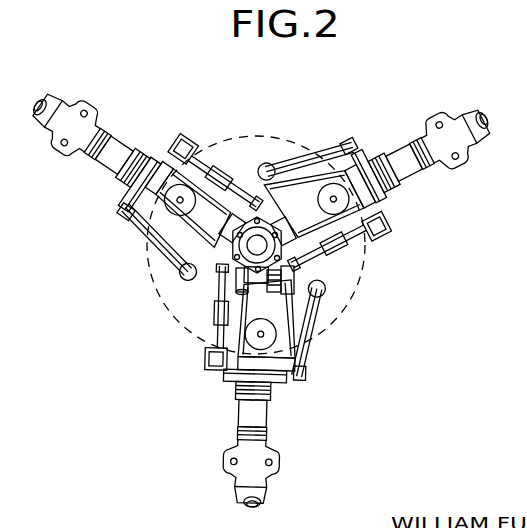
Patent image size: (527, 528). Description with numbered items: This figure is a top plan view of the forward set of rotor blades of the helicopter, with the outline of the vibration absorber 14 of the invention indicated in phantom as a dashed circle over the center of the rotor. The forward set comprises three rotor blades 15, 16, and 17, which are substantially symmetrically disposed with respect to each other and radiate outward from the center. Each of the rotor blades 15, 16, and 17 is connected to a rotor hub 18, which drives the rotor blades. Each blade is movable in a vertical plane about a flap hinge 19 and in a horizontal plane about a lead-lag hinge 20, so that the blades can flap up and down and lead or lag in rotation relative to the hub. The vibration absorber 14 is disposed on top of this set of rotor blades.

The vibration absorber 14 is at (354, 305).
The rotor blade 15 is at (268, 491).
The rotor blade 16 is at (478, 143).
The rotor blade 17 is at (62, 100).
The rotor hub 18 is at (223, 265).
The flap hinge 19 is at (236, 152).
The lead-lag hinge 20 is at (344, 200).